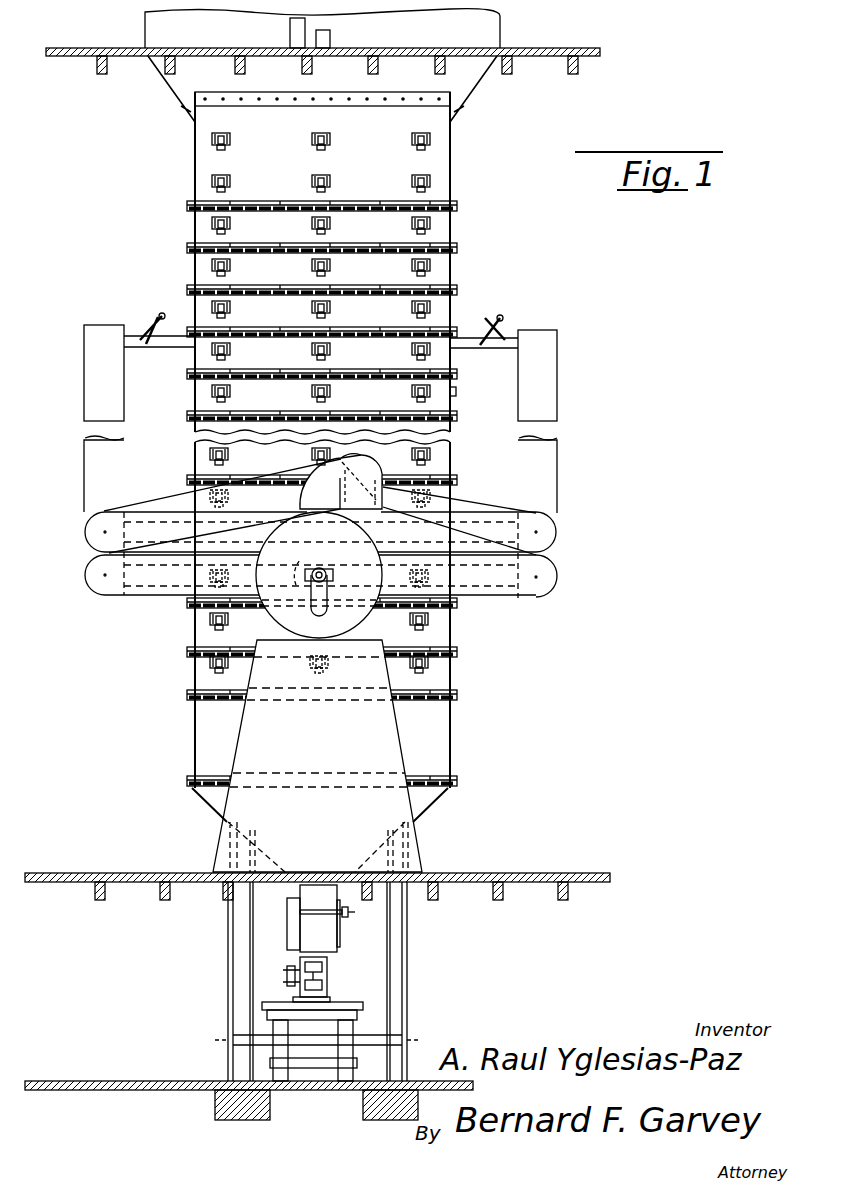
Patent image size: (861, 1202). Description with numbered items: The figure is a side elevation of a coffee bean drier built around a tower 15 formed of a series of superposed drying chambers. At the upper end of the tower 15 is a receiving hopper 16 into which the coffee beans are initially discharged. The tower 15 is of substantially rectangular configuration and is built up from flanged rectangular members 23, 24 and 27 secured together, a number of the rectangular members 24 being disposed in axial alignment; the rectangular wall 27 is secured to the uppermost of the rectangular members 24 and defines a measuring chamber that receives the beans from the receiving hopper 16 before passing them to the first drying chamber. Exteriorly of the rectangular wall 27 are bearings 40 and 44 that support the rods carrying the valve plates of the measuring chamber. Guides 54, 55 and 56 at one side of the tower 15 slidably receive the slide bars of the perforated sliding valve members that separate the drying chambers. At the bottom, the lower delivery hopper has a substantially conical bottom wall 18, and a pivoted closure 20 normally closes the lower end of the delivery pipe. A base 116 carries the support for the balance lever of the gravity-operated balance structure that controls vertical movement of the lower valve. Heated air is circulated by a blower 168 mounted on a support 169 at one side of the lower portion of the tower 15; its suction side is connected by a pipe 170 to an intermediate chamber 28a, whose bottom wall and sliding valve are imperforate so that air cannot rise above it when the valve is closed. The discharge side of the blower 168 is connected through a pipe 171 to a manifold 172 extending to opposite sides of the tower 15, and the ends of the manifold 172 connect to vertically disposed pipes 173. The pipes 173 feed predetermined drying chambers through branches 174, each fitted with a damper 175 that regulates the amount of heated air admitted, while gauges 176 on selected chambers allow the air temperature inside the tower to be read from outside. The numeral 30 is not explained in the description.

The receiving hopper 16 is at (494, 30).
The upper chamber 30 is at (379, 30).
The tower 15 is at (451, 170).
The rectangular wall 27 is at (446, 150).
The bearing 40 is at (410, 143).
The bearing 44 is at (410, 186).
The rectangular member 24 is at (458, 682).
The guide 54 is at (432, 310).
The guide 55 is at (332, 234).
The guide 56 is at (231, 267).
The branch 174 is at (150, 322).
The damper 175 is at (157, 329).
The gauge 176 is at (457, 392).
The vertically disposed pipe 173 is at (559, 483).
The pipe 171 is at (355, 457).
The manifold 172 is at (468, 502).
The pipe 170 is at (516, 600).
The blower 168 is at (347, 623).
The intermediate chamber 28a is at (452, 603).
The rectangular member 23 is at (428, 720).
The support 169 is at (400, 745).
The conical bottom wall 18 is at (424, 805).
The pivoted closure 20 is at (322, 945).
The base 116 is at (363, 1005).